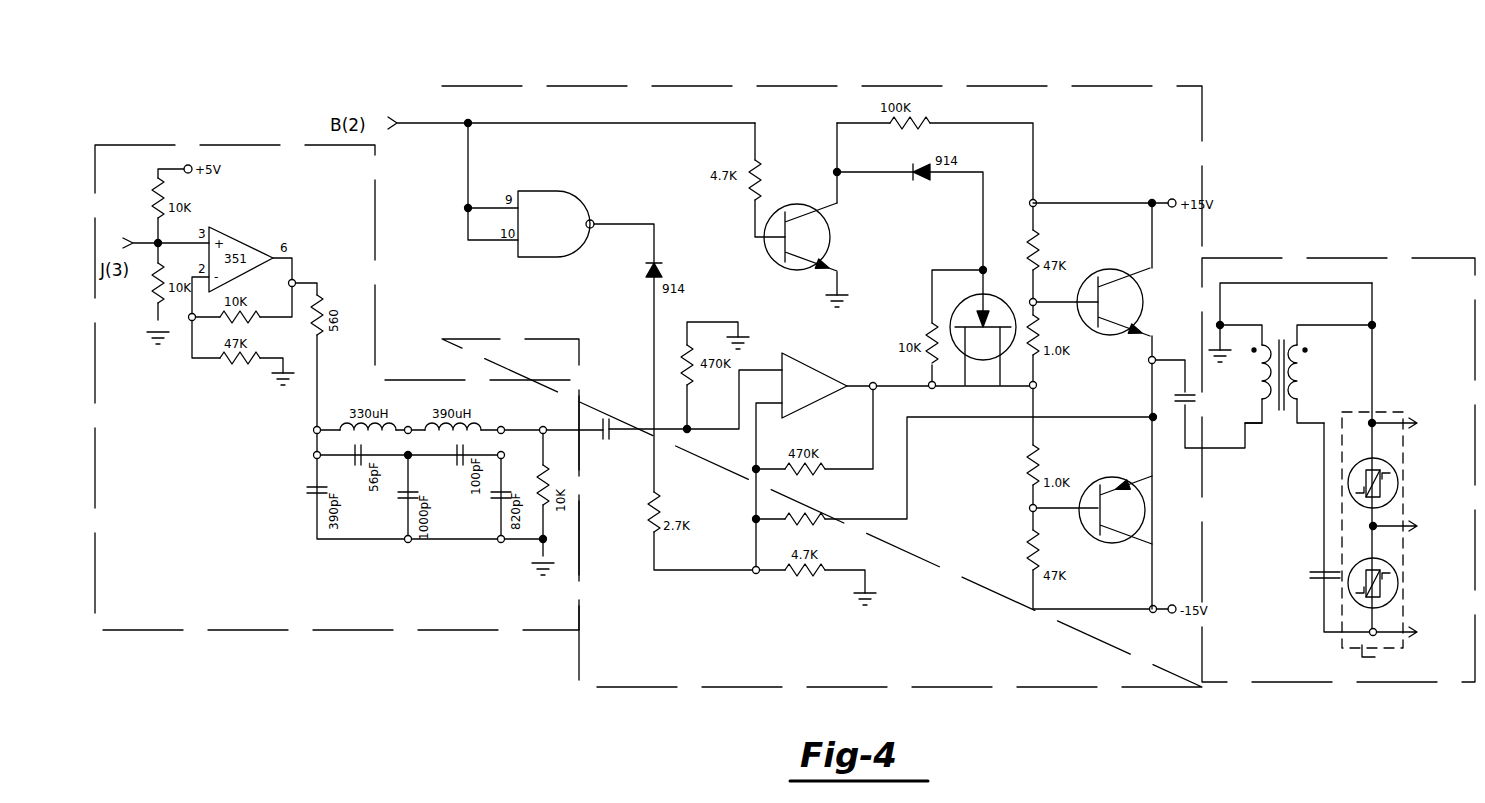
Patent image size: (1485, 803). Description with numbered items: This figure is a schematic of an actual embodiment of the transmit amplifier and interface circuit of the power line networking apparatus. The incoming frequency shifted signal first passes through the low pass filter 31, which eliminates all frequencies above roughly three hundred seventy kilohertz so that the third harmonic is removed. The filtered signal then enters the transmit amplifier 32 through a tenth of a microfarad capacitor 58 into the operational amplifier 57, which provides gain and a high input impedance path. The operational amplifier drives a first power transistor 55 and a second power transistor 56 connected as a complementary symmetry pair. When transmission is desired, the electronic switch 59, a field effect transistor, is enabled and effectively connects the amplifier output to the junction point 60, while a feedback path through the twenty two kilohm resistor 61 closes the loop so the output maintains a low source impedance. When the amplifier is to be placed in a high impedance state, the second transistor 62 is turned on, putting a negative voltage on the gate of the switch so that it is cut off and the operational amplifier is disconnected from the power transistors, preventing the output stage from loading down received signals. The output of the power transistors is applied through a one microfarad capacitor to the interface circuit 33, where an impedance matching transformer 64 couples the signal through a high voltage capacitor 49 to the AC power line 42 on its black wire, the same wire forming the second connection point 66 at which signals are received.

The low pass filter 31 is at (418, 630).
The transmit amplifier 32 is at (1053, 86).
The interface circuit 33 is at (1312, 258).
The AC power line 42 is at (1393, 412).
The high voltage capacitor 49 is at (1320, 571).
The first power transistor 55 is at (1130, 290).
The second power transistor 56 is at (1140, 500).
The operational amplifier 57 is at (820, 375).
The 0.1 microfarad capacitor 58 is at (606, 418).
The electronic switch 59 is at (988, 300).
The junction point 60 is at (1180, 408).
The 22 kilohm resistor 61 is at (826, 517).
The second transistor 62 is at (828, 226).
The impedance matching transformer 64 is at (1297, 428).
The second connection point 66 is at (1370, 635).